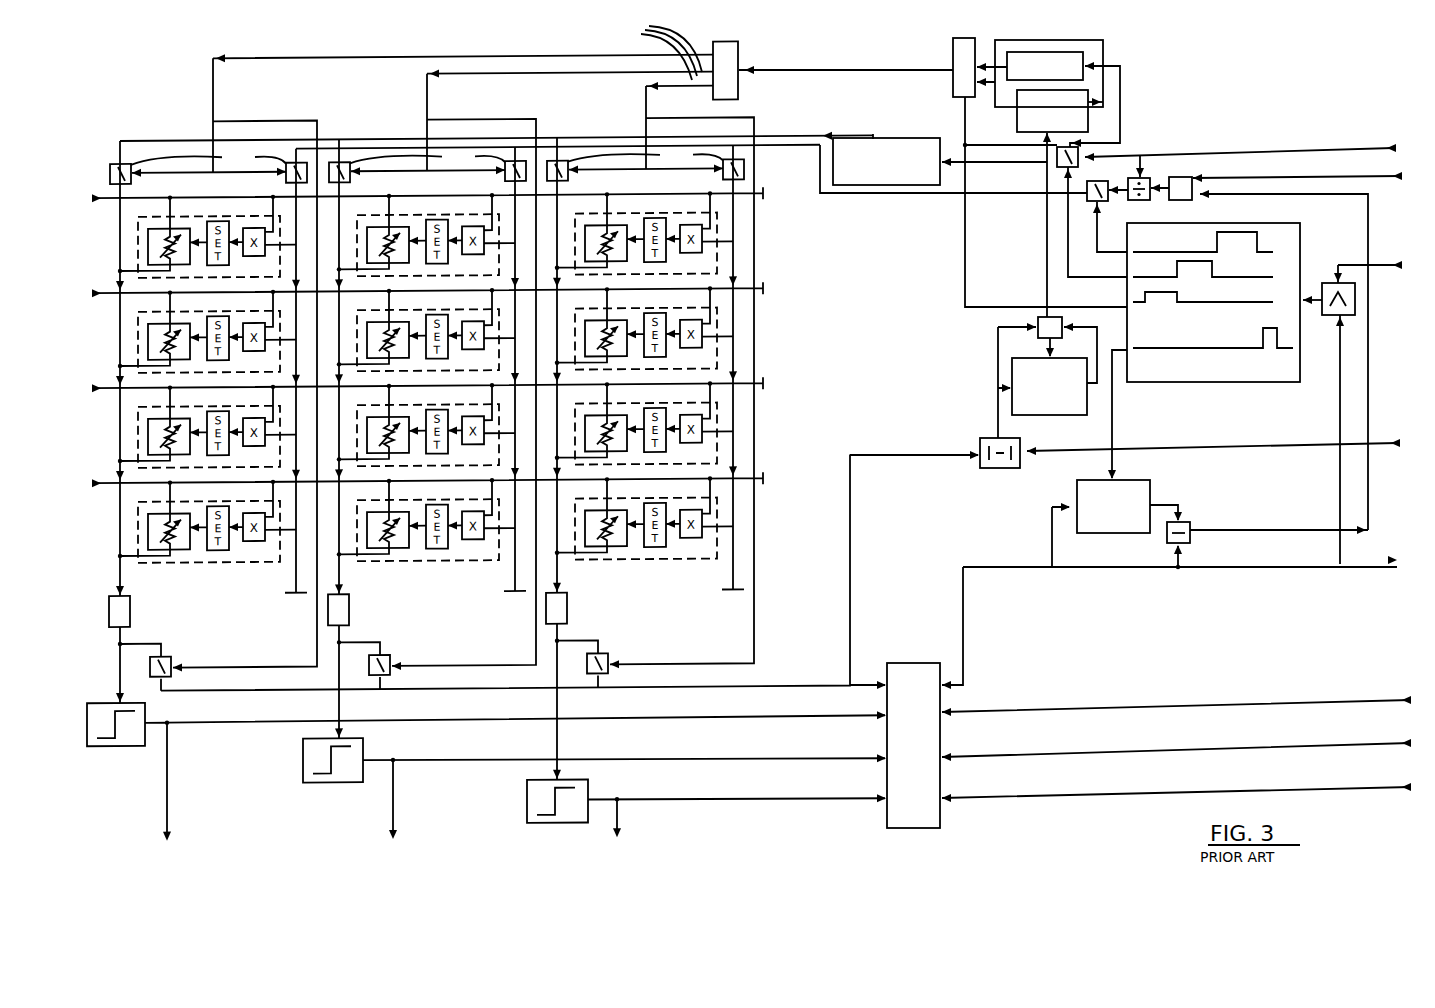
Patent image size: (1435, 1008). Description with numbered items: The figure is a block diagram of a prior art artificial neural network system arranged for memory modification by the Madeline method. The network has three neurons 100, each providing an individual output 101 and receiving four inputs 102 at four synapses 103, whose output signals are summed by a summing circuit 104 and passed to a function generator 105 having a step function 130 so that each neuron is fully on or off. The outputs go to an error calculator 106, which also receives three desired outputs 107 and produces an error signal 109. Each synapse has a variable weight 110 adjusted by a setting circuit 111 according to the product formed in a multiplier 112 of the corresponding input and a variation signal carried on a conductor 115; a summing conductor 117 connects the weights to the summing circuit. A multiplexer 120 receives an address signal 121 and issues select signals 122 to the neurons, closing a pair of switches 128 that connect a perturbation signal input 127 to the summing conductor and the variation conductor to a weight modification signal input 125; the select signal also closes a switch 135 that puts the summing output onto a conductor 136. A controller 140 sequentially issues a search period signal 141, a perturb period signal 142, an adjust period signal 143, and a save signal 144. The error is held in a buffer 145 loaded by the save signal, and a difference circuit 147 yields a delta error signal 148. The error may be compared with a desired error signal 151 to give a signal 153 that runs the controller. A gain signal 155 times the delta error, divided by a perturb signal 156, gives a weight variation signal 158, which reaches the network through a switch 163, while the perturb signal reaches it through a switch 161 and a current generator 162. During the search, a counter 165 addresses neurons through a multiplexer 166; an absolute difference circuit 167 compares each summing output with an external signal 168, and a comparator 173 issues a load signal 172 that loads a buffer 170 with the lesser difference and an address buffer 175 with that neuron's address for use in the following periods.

The neuron 100 is at (176, 131).
The output 101 is at (167, 843).
The input 102 is at (93, 198).
The synapse 103 is at (234, 216).
The summing circuit 104 is at (131, 613).
The function generator 105 is at (140, 747).
The error calculator 106 is at (913, 663).
The desired output 107 is at (1347, 787).
The error signal 109 is at (1398, 561).
The variable weight 110 is at (148, 238).
The setting circuit 111 is at (218, 268).
The multiplier 112 is at (253, 258).
The variation conductor 115 is at (320, 268).
The summing conductor 117 is at (119, 324).
The multiplexer 120 is at (728, 46).
The address signal 121 is at (790, 70).
The select signal 122 is at (659, 53).
The weight modification signal input 125 is at (810, 151).
The perturbation signal input 127 is at (812, 138).
The switch 128 is at (427, 160).
The step function 130 is at (126, 746).
The switch 135 is at (172, 656).
The conductor 136 is at (210, 691).
The controller 140 is at (1187, 382).
The search period signal 141 is at (1030, 306).
The perturb period signal 142 is at (1090, 276).
The adjust period signal 143 is at (1097, 250).
The save signal 144 is at (1114, 350).
The buffer 145 is at (1120, 534).
The difference circuit 147 is at (1190, 522).
The delta error signal 148 is at (1366, 528).
The desired error signal 151 is at (1396, 265).
The run signal 153 is at (1325, 283).
The gain signal 155 is at (1395, 176).
The perturb signal 156 is at (1390, 148).
The weight variation signal 158 is at (1124, 178).
The switch 161 is at (1078, 146).
The current generator 162 is at (930, 138).
The switch 163 is at (1105, 202).
The counter 165 is at (1085, 52).
The multiplexer 166 is at (953, 48).
The absolute difference circuit 167 is at (980, 440).
The external signal 168 is at (1393, 443).
The buffer 170 is at (1012, 402).
The load signal 172 is at (1047, 166).
The comparator 173 is at (1036, 321).
The address buffer 175 is at (1088, 115).